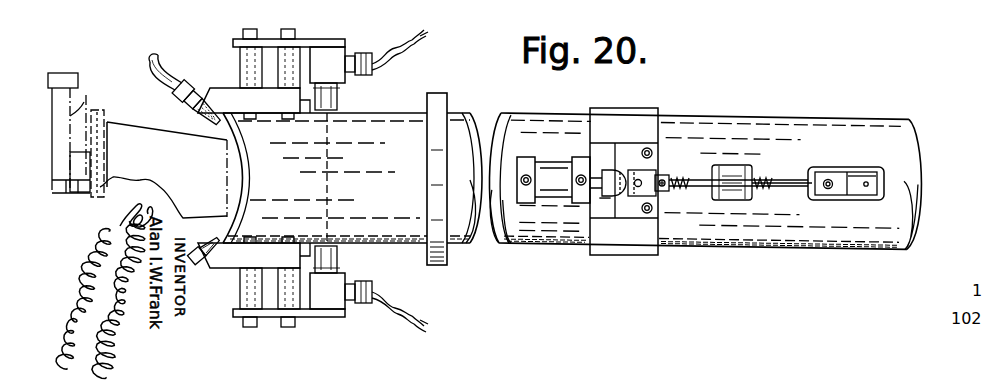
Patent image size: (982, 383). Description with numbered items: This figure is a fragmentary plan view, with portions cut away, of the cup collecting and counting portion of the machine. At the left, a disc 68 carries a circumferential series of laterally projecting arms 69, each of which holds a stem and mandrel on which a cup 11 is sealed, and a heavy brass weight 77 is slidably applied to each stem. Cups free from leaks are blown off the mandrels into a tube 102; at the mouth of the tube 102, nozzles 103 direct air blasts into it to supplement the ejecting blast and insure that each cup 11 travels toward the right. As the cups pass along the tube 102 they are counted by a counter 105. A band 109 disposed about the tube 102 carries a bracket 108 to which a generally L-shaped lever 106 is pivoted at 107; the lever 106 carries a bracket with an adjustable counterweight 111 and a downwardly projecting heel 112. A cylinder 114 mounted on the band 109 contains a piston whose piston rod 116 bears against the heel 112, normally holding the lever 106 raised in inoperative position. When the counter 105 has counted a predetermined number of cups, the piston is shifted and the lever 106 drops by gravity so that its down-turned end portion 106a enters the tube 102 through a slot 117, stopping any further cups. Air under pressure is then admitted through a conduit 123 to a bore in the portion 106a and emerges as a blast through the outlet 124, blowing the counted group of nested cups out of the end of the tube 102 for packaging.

The cup 11 is at (158, 140).
The disc 68 is at (61, 74).
The arm 69 is at (86, 94).
The weight 77 is at (98, 112).
The tube 102 is at (384, 217).
The nozzle 103 is at (197, 91).
The counter 105 is at (322, 53).
The L-shaped lever 106 is at (793, 178).
The down-turned end portion 106a is at (854, 178).
The pivot 107 is at (636, 190).
The bracket 108 is at (656, 171).
The band 109 is at (659, 110).
The adjustable counterweight 111 is at (728, 168).
The heel 112 is at (618, 190).
The cylinder 114 is at (547, 170).
The piston rod 116 is at (602, 178).
The slot 117 is at (853, 177).
The conduit 123 is at (833, 193).
The outlet 124 is at (872, 184).